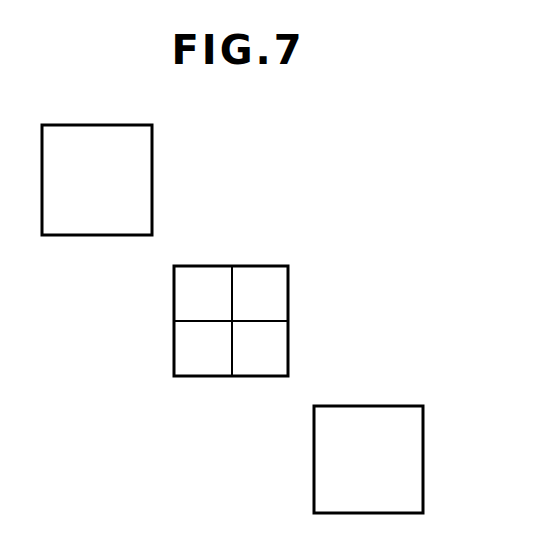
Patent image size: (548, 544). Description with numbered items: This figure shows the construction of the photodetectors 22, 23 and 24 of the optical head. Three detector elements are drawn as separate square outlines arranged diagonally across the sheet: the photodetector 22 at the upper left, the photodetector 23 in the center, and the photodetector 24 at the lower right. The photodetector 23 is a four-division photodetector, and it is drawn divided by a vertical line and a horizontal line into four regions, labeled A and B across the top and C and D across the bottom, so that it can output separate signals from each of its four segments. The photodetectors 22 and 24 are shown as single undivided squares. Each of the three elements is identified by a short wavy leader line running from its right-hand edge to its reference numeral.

The photodetector 22 is at (152, 178).
The photodetector 23 is at (288, 320).
The photodetector 24 is at (423, 464).